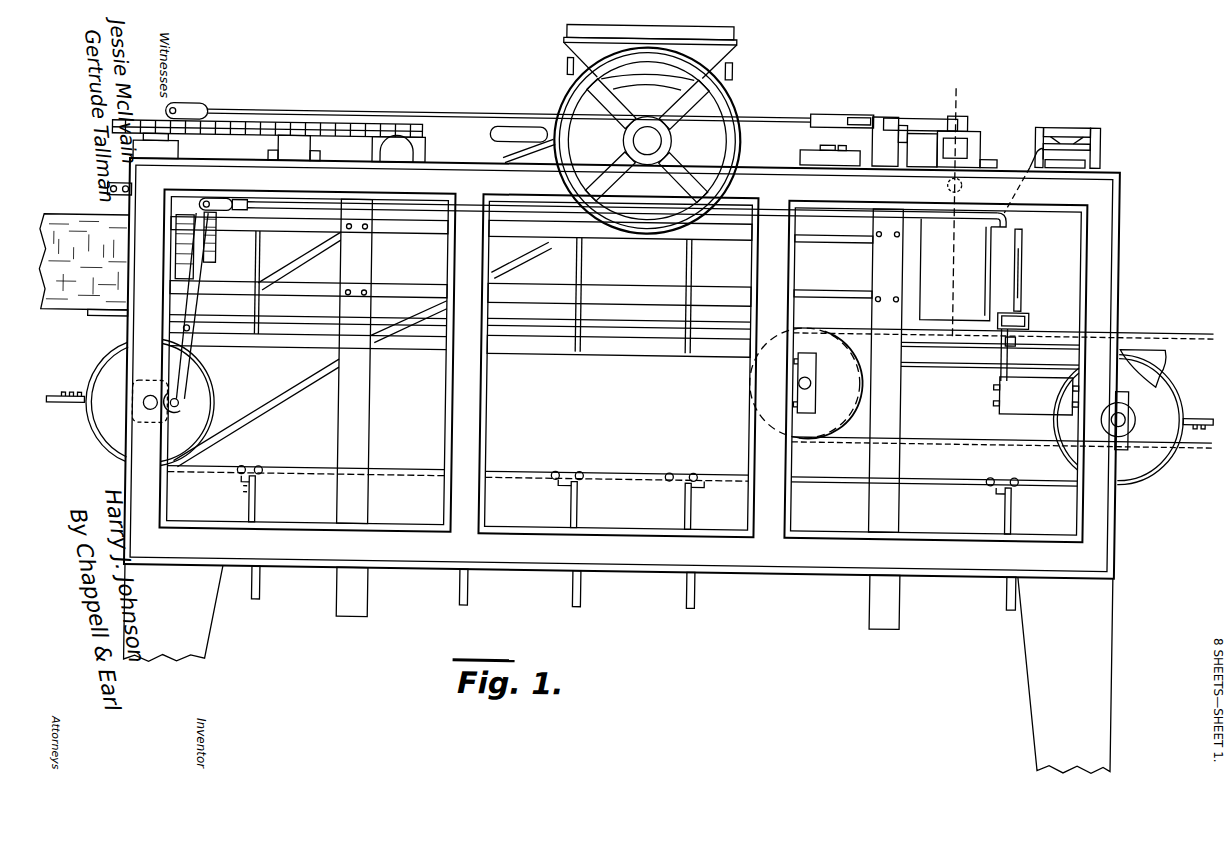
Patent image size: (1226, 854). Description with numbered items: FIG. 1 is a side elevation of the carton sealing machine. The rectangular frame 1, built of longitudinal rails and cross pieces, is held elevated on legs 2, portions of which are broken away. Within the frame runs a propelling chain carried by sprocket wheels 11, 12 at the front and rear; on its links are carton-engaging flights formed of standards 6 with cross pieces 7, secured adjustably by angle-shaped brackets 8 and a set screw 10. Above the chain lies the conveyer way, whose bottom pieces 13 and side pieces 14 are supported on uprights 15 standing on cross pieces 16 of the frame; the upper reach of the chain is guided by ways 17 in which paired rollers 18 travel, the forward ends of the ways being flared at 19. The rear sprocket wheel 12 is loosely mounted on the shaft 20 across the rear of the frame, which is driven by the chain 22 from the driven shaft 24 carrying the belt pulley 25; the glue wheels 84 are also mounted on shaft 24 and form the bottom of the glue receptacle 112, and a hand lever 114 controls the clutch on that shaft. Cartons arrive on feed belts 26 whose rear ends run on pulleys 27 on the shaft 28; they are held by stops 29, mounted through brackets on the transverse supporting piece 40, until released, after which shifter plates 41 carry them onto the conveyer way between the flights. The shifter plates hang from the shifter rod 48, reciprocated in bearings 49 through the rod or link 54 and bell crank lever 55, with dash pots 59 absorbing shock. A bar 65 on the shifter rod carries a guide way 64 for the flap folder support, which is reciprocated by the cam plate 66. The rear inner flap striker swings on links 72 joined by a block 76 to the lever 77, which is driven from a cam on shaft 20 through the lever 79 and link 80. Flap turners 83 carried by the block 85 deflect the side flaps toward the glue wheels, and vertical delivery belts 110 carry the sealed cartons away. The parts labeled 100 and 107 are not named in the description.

The frame 1 is at (844, 552).
The legs 2 is at (212, 649).
The standard 6 is at (259, 306).
The cross pieces 7 is at (266, 586).
The angle-shaped brackets 8 is at (252, 471).
The set screw 10 is at (956, 79).
The sprocket wheel 11 is at (1156, 445).
The sprocket wheel 12 is at (102, 448).
The bottom pieces 13 is at (300, 321).
The side pieces 14 is at (249, 230).
The uprights 15 is at (352, 412).
The cross pieces 16 is at (348, 510).
The ways 17 is at (420, 345).
The rollers 18 is at (270, 465).
The flared ends 19 is at (1161, 348).
The shaft 20 is at (156, 410).
The chain 22 is at (507, 151).
The driven shaft 24 is at (650, 132).
The belt pulley 25 is at (677, 122).
The feed belts 26 is at (1165, 322).
The pulleys 27 is at (811, 407).
The shaft 28 is at (801, 375).
The stops 29 is at (1032, 306).
The supporting piece 40 is at (1020, 384).
The shifter plates 41 is at (982, 249).
The shifter rod 48 is at (968, 136).
The bearings 49 is at (975, 125).
The rod or link 54 is at (368, 114).
The bell crank lever 55 is at (900, 116).
The dash pots 59 is at (962, 172).
The guide way 64 is at (920, 120).
The bar 65 is at (927, 139).
The cam plate 66 is at (883, 121).
The links 72 is at (1102, 126).
The block 76 is at (1073, 113).
The lever 77 is at (1090, 124).
The lever 79 is at (204, 236).
The link 80 is at (315, 200).
The flap turners or deflectors 83 is at (800, 147).
The glue wheels 84 is at (643, 87).
The block 85 is at (810, 140).
The rod 100 is at (253, 118).
The bar 107 is at (99, 314).
The belts 110 is at (64, 313).
The receptacle 112 is at (736, 25).
The hand lever 114 is at (517, 121).